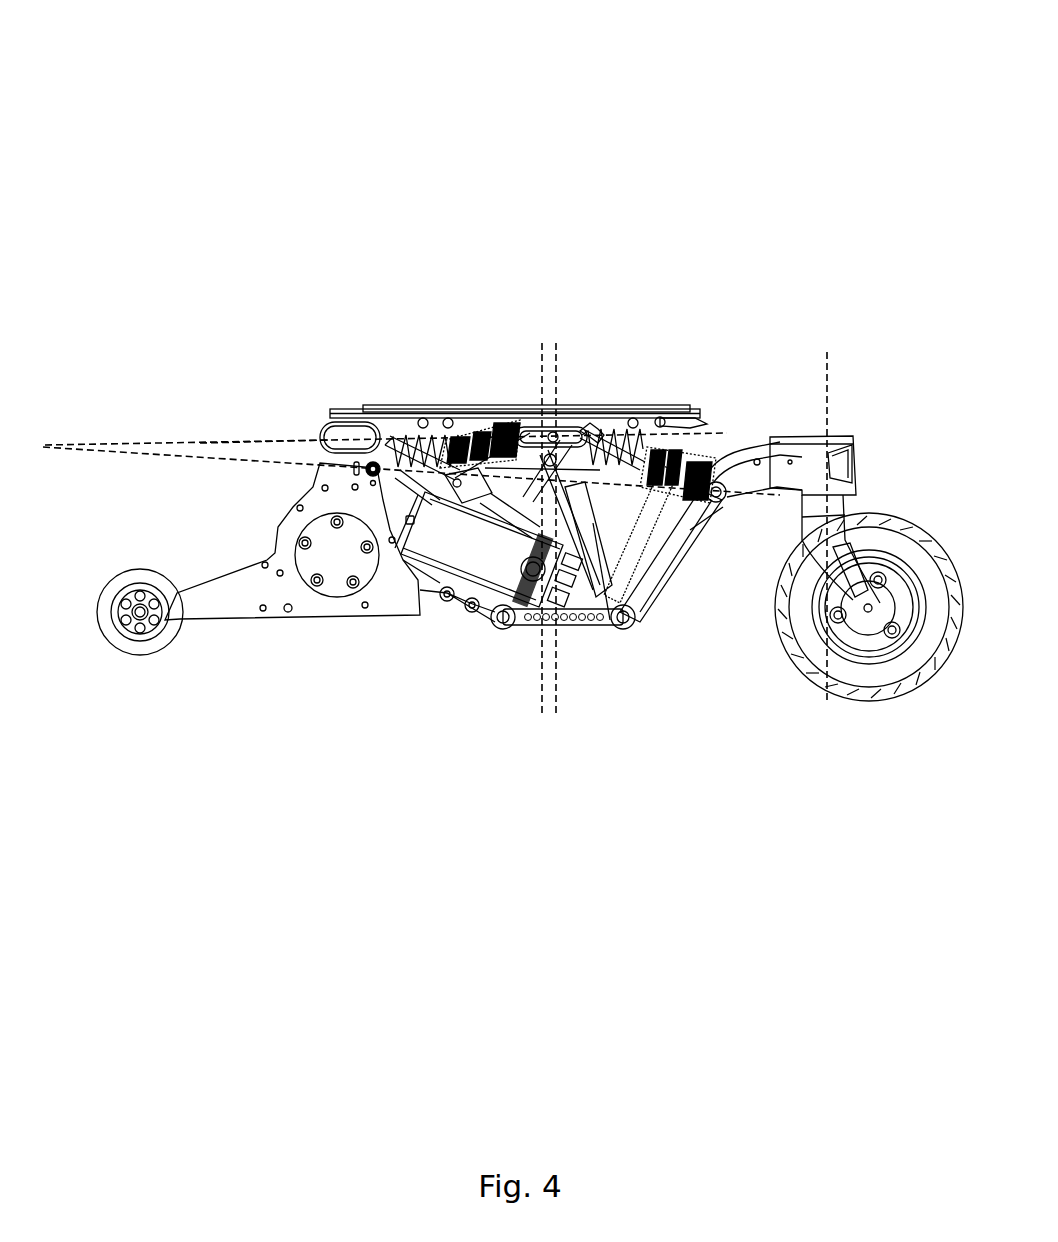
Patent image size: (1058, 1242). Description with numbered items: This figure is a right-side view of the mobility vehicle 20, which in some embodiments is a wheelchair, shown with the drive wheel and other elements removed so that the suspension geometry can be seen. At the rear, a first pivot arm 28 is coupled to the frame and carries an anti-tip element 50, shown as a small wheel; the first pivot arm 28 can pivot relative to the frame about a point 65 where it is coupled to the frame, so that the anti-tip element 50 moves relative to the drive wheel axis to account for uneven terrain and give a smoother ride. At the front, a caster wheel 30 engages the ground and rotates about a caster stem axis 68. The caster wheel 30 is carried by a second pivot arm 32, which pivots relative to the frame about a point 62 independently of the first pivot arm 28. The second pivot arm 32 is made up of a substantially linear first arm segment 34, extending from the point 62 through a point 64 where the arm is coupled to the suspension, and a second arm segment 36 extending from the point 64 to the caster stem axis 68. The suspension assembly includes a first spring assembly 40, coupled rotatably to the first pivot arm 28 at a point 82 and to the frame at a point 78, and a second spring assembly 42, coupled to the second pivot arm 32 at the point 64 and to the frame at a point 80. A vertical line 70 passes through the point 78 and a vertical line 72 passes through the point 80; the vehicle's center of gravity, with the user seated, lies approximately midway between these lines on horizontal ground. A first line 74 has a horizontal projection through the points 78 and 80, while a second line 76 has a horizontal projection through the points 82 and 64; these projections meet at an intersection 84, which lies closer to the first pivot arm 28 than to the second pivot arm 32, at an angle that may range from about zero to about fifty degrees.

The mobility vehicle 20 is at (310, 161).
The first pivot arm 28 is at (378, 588).
The caster wheel 30 is at (836, 635).
The second pivot arm 32 is at (686, 523).
The first arm segment 34 is at (655, 560).
The second arm segment 36 is at (767, 462).
The first spring assembly 40 is at (422, 423).
The second spring assembly 42 is at (636, 428).
The anti-tip element 50 is at (147, 630).
The point 62 is at (627, 628).
The point 64 is at (714, 468).
The point 65 is at (505, 630).
The caster stem axis 68 is at (827, 390).
The vertical line 70 is at (541, 400).
The vertical line 72 is at (553, 432).
The first line 74 is at (278, 420).
The second line 76 is at (216, 457).
The point 78 is at (533, 417).
The point 80 is at (560, 430).
The point 82 is at (376, 472).
The intersection 84 is at (58, 441).